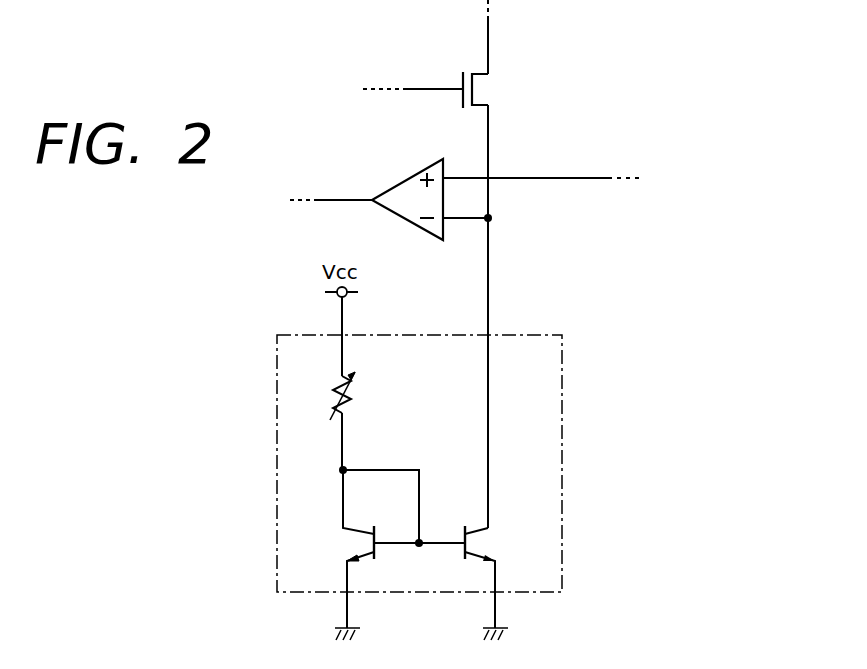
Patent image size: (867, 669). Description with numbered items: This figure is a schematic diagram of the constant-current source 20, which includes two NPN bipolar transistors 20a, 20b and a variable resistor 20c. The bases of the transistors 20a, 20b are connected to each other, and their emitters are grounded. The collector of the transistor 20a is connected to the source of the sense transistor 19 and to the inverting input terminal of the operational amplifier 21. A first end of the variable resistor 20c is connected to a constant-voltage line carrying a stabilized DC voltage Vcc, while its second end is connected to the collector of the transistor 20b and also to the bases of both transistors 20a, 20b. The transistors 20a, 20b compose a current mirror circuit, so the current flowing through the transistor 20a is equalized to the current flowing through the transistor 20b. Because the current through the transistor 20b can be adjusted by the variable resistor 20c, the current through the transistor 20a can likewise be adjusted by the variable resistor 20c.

The sense transistor 19 is at (483, 91).
The operational amplifier 21 is at (414, 176).
The constant-current source 20 is at (524, 331).
The transistor 20a is at (472, 530).
The transistor 20b is at (364, 530).
The variable resistor 20c is at (357, 396).